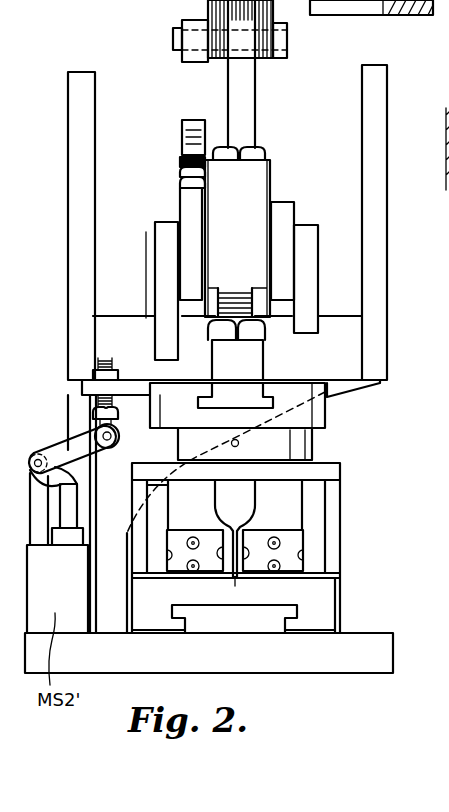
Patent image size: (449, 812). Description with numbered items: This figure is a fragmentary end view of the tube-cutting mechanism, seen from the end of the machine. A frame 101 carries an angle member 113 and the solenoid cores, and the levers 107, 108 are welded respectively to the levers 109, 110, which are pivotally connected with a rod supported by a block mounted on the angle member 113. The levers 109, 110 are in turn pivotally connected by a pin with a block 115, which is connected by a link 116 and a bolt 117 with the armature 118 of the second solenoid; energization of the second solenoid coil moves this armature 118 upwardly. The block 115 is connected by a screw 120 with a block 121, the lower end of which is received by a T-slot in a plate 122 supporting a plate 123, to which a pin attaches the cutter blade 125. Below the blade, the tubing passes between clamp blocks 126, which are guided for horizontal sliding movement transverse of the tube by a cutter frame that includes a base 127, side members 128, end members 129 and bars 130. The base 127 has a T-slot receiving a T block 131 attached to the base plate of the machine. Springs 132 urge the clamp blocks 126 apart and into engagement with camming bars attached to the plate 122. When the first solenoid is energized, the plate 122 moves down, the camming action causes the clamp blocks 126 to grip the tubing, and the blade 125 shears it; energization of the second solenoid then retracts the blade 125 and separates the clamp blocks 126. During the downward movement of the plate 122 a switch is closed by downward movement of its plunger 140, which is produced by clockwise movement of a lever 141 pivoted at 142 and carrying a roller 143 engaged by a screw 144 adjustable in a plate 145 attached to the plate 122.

The frame 101 is at (70, 277).
The lever 107 is at (306, 232).
The lever 108 is at (157, 232).
The lever 109 is at (286, 205).
The lever 110 is at (183, 204).
The angle member 113 is at (360, 6).
The block 115 is at (262, 178).
The link 116 is at (236, 95).
The bolt 117 is at (176, 39).
The armature 118 is at (226, 6).
The screw 120 is at (242, 295).
The block 121 is at (255, 357).
The plate 122 is at (305, 413).
The plate 123 is at (318, 444).
The cutter blade 125 is at (243, 492).
The clamp blocks 126 is at (206, 528).
The base 127 is at (328, 595).
The side members 128 is at (328, 516).
The end members 129 is at (135, 576).
The bars 130 is at (335, 473).
The T block 131 is at (287, 613).
The springs 132 is at (235, 586).
The plunger 140 is at (77, 497).
The lever 141 is at (75, 452).
The pivot 142 is at (38, 458).
The roller 143 is at (115, 428).
The screw 144 is at (90, 410).
The plate 145 is at (82, 384).